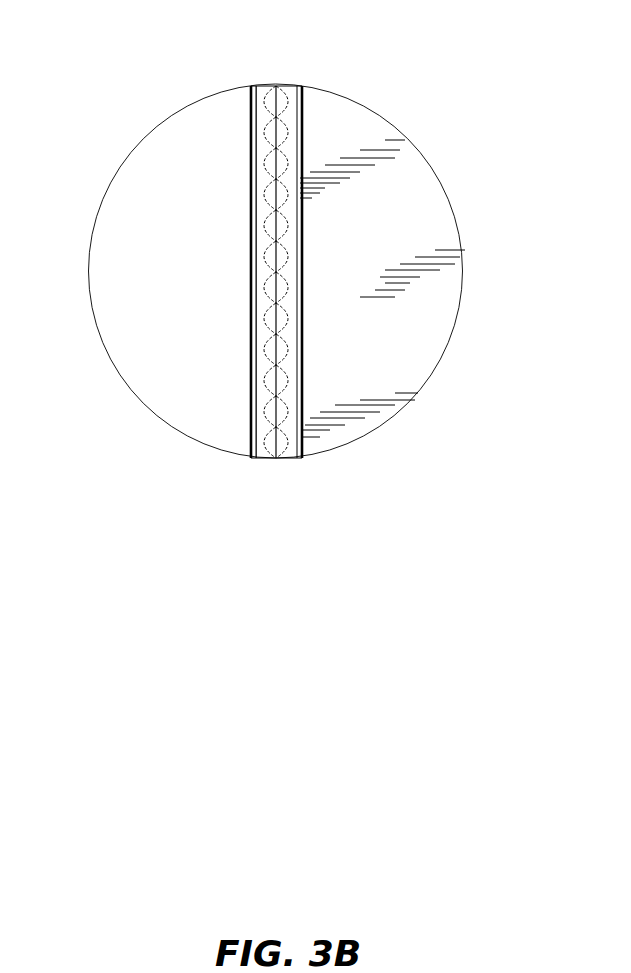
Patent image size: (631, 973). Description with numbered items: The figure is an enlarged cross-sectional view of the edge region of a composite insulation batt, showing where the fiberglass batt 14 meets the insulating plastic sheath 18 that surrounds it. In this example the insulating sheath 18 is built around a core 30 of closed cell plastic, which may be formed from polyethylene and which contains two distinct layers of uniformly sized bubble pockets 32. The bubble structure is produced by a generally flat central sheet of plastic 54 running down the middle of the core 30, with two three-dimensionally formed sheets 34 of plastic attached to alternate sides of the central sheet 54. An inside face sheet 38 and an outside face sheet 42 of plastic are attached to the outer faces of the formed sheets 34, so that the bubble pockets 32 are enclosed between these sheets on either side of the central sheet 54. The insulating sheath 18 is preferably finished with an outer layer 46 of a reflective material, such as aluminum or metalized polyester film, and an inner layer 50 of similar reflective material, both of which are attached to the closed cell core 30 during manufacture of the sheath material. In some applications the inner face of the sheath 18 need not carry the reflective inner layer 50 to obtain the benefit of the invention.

The fiberglass batt 14 is at (368, 247).
The insulating plastic sheath 18 is at (290, 112).
The core 30 is at (290, 173).
The bubble pockets 32 is at (258, 229).
The 3D formed sheets 34 is at (267, 158).
The inside face sheet 38 is at (300, 360).
The outside face sheet 42 is at (253, 375).
The outer layer 46 is at (252, 428).
The inner layer 50 is at (302, 408).
The central sheet of plastic 54 is at (277, 108).